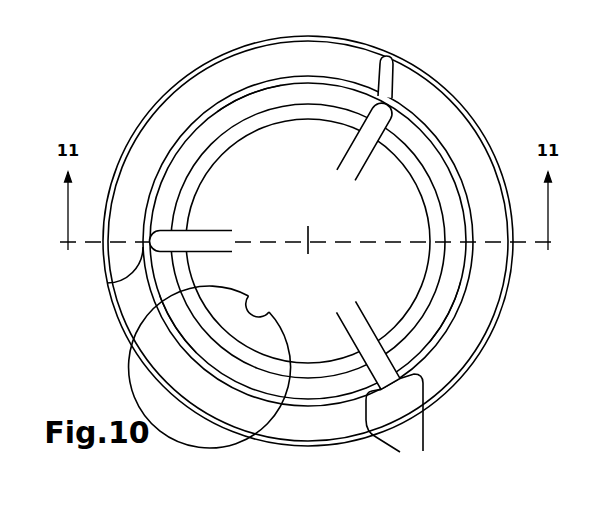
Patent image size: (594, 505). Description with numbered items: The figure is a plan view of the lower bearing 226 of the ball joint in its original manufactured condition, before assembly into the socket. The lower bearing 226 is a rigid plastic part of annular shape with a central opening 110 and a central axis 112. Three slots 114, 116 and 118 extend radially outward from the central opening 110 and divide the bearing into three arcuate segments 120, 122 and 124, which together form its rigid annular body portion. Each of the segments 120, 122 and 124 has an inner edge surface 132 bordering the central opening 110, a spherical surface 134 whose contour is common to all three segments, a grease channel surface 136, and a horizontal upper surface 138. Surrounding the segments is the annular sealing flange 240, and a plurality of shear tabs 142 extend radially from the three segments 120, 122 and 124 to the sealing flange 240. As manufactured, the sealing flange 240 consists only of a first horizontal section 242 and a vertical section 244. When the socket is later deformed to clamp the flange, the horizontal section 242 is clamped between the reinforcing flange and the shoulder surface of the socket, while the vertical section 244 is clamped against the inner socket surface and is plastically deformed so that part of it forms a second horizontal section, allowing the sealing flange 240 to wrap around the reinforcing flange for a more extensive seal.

The central opening 110 is at (312, 198).
The central axis 112 is at (313, 246).
The slot 114 is at (356, 158).
The slot 116 is at (355, 318).
The slot 118 is at (229, 232).
The arcuate segment 120 is at (438, 140).
The arcuate segment 122 is at (165, 313).
The arcuate segment 124 is at (234, 99).
The inner edge surface 132 is at (273, 317).
The spherical surface 134 is at (407, 272).
The grease channel surface 136 is at (430, 300).
The horizontal upper surface 138 is at (432, 325).
The shear tab 142 is at (393, 62).
The lower bearing 226 is at (181, 65).
The sealing flange 240 is at (455, 388).
The first horizontal section 242 is at (183, 108).
The vertical section 244 is at (137, 130).